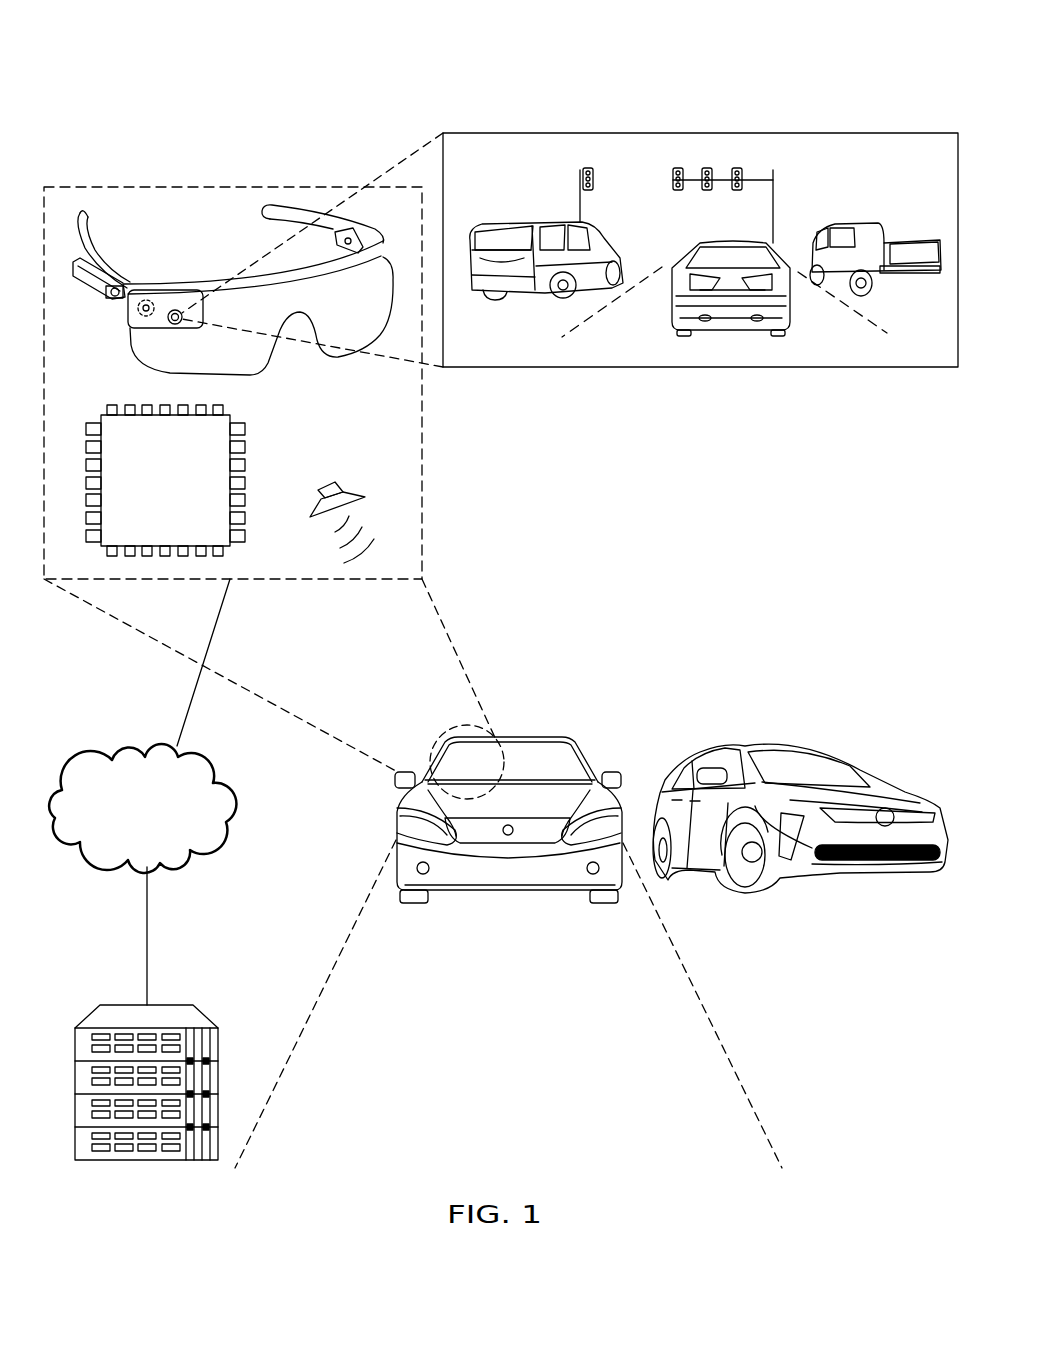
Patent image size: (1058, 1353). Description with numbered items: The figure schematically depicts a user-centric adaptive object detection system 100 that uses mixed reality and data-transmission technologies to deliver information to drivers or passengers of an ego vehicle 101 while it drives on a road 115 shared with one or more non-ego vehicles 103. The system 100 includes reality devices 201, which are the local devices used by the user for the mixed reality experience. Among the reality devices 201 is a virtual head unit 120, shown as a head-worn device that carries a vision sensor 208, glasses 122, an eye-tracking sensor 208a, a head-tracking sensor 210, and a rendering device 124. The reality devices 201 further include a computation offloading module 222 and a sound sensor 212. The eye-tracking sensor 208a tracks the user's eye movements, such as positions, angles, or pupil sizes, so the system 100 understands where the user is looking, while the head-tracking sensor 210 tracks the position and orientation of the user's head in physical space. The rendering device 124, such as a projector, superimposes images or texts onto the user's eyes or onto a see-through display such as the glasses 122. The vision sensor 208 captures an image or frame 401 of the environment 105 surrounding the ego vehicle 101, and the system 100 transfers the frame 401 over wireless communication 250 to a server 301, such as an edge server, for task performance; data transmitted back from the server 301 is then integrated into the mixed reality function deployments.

The user-centric adaptive object detection system 100 is at (501, 589).
The ego vehicle 101 is at (553, 738).
The non-ego vehicle 103 is at (843, 877).
The environment 105 is at (791, 540).
The road 115 is at (718, 621).
The virtual head unit 120 is at (227, 263).
The glasses 122 is at (273, 375).
The rendering device 124 is at (108, 302).
The reality devices 201 is at (66, 186).
The vision sensor 208 is at (180, 324).
The eye-tracking sensor 208a is at (146, 299).
The head-tracking sensor 210 is at (335, 245).
The sound sensor 212 is at (330, 484).
The computation offloading module 222 is at (188, 494).
The wireless communication 250 is at (165, 819).
The server 301 is at (100, 1003).
The frame 401 is at (503, 132).